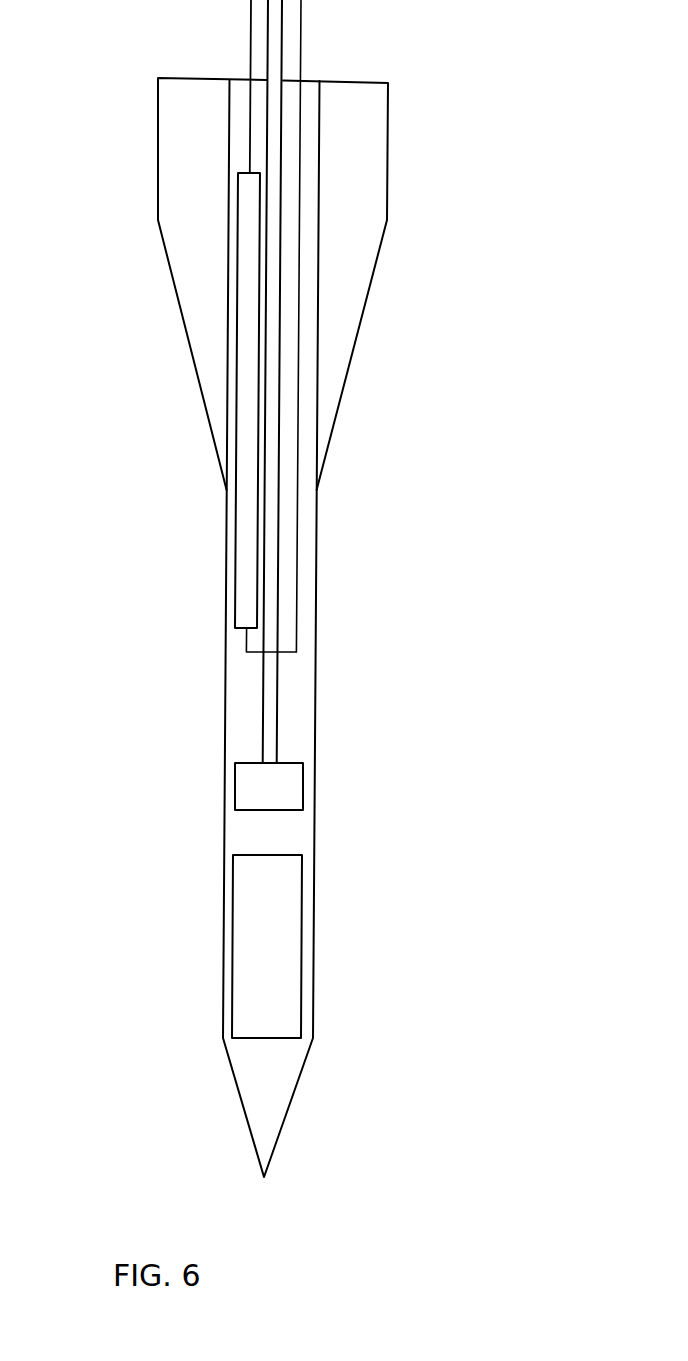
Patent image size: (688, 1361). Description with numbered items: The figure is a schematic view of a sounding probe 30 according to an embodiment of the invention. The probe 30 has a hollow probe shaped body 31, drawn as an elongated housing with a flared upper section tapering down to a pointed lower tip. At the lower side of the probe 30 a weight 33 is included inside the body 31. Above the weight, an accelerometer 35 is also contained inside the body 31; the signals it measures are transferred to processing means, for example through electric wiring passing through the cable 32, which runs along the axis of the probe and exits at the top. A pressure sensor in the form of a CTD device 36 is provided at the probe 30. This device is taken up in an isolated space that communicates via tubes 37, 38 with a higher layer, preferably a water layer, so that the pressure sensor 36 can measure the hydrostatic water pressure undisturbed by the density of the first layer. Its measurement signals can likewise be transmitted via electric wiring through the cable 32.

The sounding probe 30 is at (384, 473).
The hollow probe shaped body 31 is at (355, 352).
The cable 32 is at (283, 50).
The weight 33 is at (297, 947).
The accelerometer 35 is at (303, 785).
The CTD device 36 is at (236, 593).
The tube 37 is at (249, 13).
The tube 38 is at (302, 14).